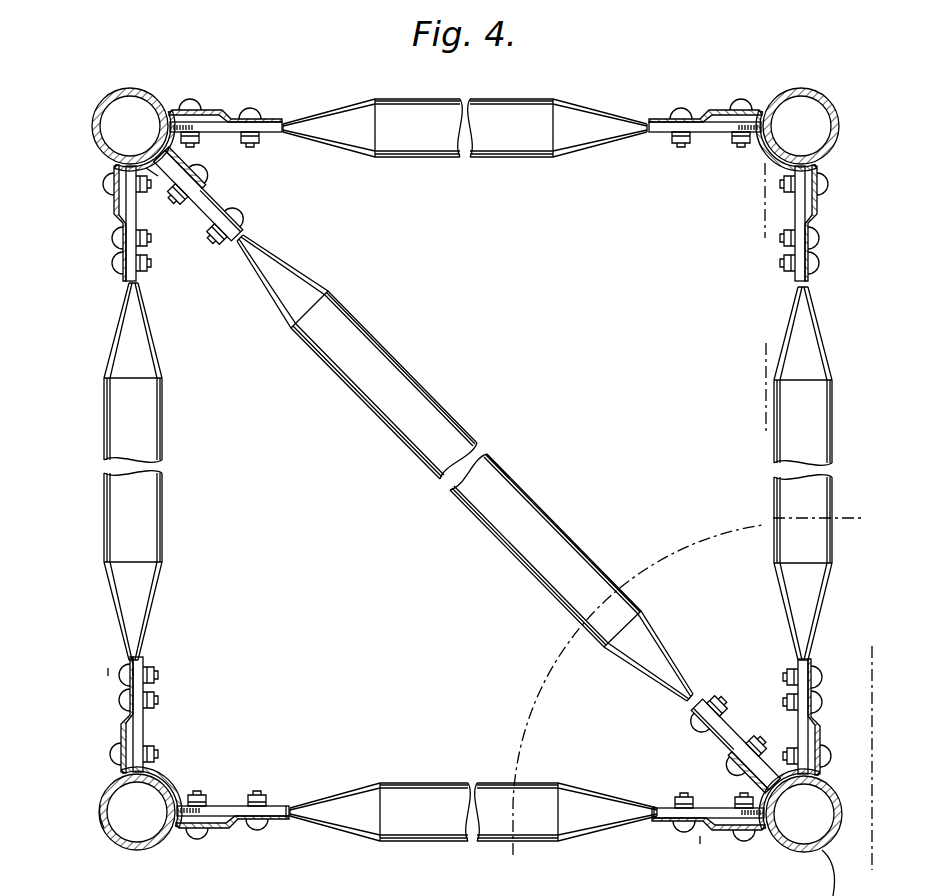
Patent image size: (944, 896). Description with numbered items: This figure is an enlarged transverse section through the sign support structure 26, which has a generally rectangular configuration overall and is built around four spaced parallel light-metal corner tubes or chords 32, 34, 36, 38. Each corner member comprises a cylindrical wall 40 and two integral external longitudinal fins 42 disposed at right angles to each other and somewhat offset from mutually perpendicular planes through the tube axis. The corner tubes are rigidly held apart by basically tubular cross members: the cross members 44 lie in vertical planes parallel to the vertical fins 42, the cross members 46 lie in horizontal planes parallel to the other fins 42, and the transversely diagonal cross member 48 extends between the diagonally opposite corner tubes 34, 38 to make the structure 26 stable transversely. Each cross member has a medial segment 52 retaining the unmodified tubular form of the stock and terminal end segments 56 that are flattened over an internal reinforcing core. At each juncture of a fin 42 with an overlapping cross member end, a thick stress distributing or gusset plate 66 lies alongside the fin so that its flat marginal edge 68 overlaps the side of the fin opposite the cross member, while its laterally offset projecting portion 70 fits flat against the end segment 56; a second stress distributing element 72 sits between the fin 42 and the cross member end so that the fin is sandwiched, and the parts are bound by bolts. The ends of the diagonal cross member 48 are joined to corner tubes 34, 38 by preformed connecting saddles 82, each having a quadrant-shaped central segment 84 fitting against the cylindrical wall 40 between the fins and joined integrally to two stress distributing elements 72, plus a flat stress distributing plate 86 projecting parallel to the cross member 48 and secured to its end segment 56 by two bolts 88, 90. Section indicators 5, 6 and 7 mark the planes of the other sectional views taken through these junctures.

The support structure 26 is at (470, 452).
The corner tube 32 is at (107, 845).
The corner tube 34 is at (94, 154).
The corner tube 36 is at (838, 113).
The corner tube 38 is at (805, 856).
The cylindrical wall 40 is at (100, 805).
The external longitudinal fins 42 is at (207, 108).
The cross member 44 is at (122, 441).
The cross member 46 is at (438, 154).
The cross member 48 is at (478, 528).
The medial segment 52 is at (443, 413).
The terminal end segments 56 is at (212, 202).
The stress distributing plate 66 is at (123, 690).
The marginal edge 68 is at (217, 838).
The projecting portion 70 is at (288, 822).
The second stress distributing element 72 is at (215, 820).
The connecting saddle 82 is at (175, 154).
The central segment 84 is at (153, 180).
The stress distributing plate 86 is at (202, 222).
The bolt 88 is at (732, 765).
The bolt 90 is at (682, 730).
The section line 5- 5 is at (889, 640).
The section line 6- 6 is at (761, 172).
The section line 7- 7 is at (857, 513).